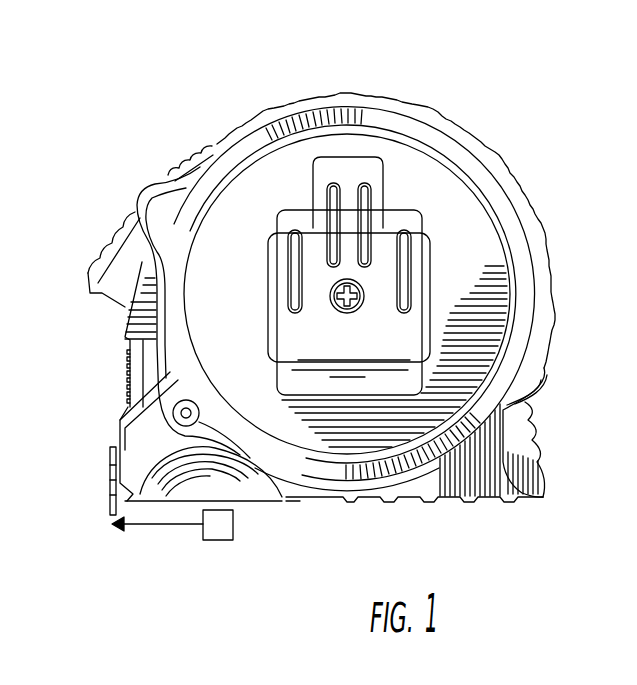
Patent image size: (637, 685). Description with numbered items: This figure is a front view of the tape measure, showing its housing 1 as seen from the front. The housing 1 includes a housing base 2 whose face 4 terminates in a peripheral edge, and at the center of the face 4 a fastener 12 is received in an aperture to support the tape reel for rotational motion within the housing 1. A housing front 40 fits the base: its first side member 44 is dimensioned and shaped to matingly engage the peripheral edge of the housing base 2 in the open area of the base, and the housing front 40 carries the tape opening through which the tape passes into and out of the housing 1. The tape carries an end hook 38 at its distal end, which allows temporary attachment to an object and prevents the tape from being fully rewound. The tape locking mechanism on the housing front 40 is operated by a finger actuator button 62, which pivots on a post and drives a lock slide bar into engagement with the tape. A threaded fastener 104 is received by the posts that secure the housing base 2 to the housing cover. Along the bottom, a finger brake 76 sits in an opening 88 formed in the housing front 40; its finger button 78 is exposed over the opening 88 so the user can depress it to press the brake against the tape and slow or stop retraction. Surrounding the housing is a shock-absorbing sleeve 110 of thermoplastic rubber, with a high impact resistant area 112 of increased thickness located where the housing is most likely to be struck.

The housing 1 is at (407, 72).
The housing base 2 is at (237, 158).
The face 4 is at (435, 180).
The fastener 12 is at (366, 297).
The finger actuator button 62 is at (128, 218).
The housing front 40 is at (103, 386).
The threaded fastener 104 is at (190, 408).
The first side member 44 is at (162, 498).
The end hook 38 is at (110, 518).
The opening 88 is at (137, 460).
The finger button 78 is at (230, 488).
The finger brake 76 is at (270, 516).
The high impact resistant area 112 is at (513, 450).
The shock-absorbing sleeve 110 is at (484, 472).